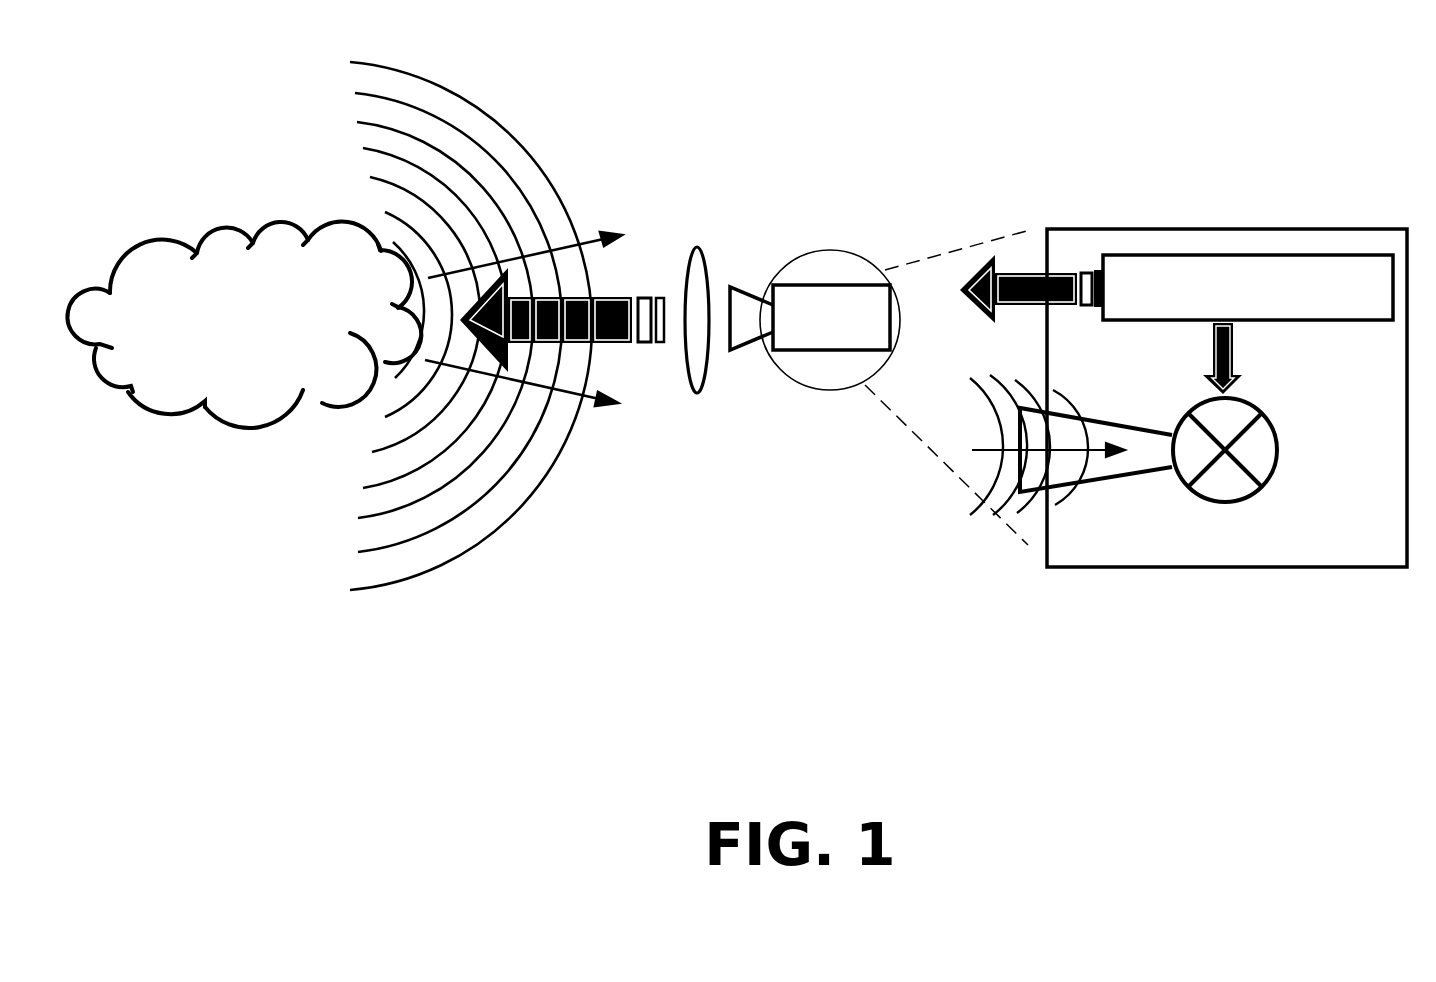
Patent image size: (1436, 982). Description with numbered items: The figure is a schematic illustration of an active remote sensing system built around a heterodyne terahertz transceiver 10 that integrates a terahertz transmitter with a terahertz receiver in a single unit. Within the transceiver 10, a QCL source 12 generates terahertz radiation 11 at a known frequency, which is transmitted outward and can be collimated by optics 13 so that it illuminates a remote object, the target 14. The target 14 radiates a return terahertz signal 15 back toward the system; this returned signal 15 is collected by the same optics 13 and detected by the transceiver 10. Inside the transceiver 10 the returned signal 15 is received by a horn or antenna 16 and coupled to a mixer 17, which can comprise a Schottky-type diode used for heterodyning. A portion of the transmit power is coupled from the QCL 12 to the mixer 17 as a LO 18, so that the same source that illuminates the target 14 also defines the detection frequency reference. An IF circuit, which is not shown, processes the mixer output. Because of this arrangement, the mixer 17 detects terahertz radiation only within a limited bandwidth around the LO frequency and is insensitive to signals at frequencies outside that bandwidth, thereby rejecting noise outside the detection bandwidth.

The heterodyne terahertz transceiver 10 is at (840, 252).
The terahertz radiation 11 is at (625, 295).
The QCL source 12 is at (1220, 306).
The optics 13 is at (698, 247).
The target 14 is at (268, 338).
The return terahertz signal 15 is at (540, 483).
The horn or antenna 16 is at (1115, 478).
The mixer 17 is at (1278, 443).
The LO 18 is at (1237, 353).